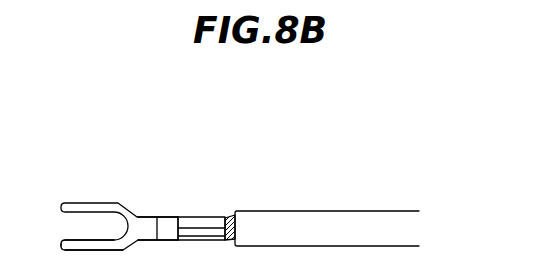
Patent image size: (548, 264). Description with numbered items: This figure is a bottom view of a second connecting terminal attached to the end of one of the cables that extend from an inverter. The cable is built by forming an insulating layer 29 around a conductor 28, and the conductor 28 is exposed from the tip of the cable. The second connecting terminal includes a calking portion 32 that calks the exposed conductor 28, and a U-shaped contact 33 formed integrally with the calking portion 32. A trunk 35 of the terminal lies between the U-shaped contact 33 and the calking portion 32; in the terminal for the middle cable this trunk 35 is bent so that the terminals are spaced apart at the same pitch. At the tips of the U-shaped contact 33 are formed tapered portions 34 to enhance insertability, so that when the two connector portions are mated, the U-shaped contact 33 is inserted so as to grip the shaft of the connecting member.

The conductor 28 is at (231, 217).
The insulating layer 29 is at (318, 215).
The calking portion 32 is at (203, 219).
The U-shaped contact 33 is at (85, 208).
The tapered portion 34 is at (63, 245).
The trunk 35 is at (157, 218).